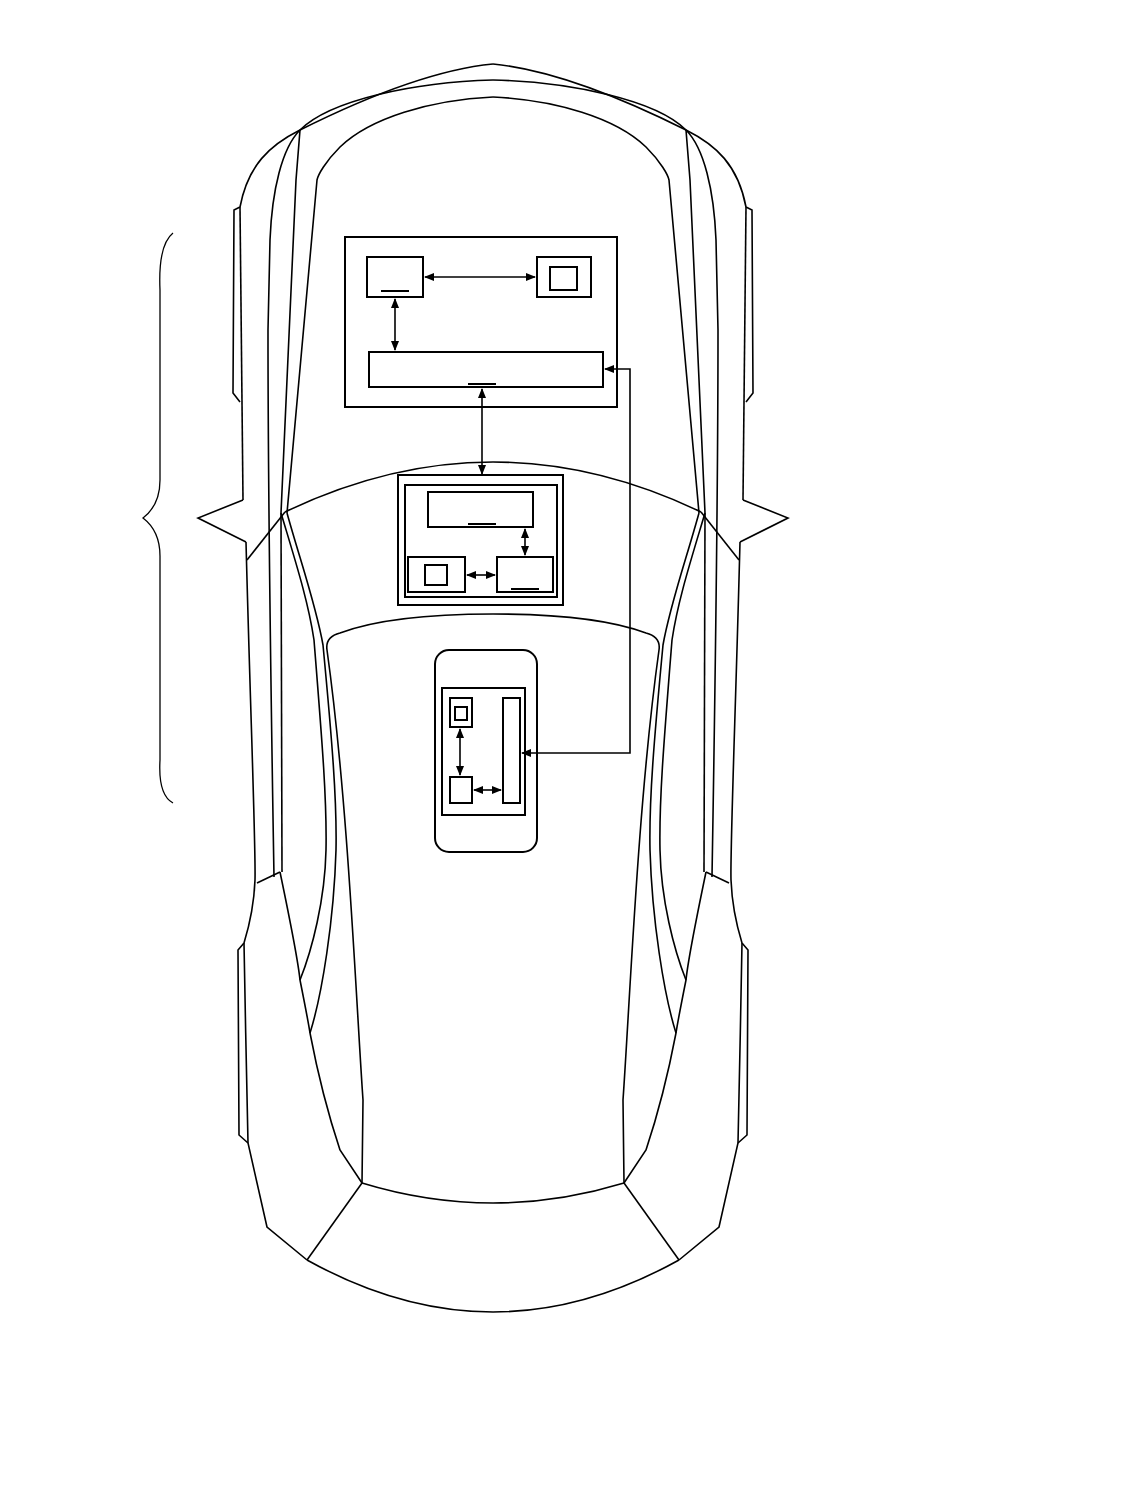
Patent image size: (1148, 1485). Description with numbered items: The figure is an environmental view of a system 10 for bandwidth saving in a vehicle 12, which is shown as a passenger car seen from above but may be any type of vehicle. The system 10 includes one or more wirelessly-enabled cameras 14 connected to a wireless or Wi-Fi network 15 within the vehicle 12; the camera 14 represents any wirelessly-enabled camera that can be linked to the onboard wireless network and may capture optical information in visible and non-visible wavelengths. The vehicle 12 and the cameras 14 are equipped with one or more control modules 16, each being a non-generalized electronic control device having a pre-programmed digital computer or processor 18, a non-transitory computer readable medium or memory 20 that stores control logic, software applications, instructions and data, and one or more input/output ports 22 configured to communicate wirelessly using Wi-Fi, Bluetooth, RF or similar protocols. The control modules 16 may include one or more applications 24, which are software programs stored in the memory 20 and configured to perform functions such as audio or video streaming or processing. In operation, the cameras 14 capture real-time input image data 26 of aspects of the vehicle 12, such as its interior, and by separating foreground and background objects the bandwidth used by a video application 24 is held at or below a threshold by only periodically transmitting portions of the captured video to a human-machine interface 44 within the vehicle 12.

The system 10 is at (812, 60).
The vehicle 12 is at (712, 145).
The wirelessly-enabled camera 14 is at (563, 510).
The wireless or Wi-Fi network 15 is at (142, 518).
The control module 16 is at (404, 237).
The processor 18 is at (450, 788).
The memory 20 is at (547, 257).
The input/output port 22 is at (515, 727).
The application 24 is at (582, 257).
The real-time input image data 26 is at (487, 452).
The human-machine interface 44 is at (532, 864).